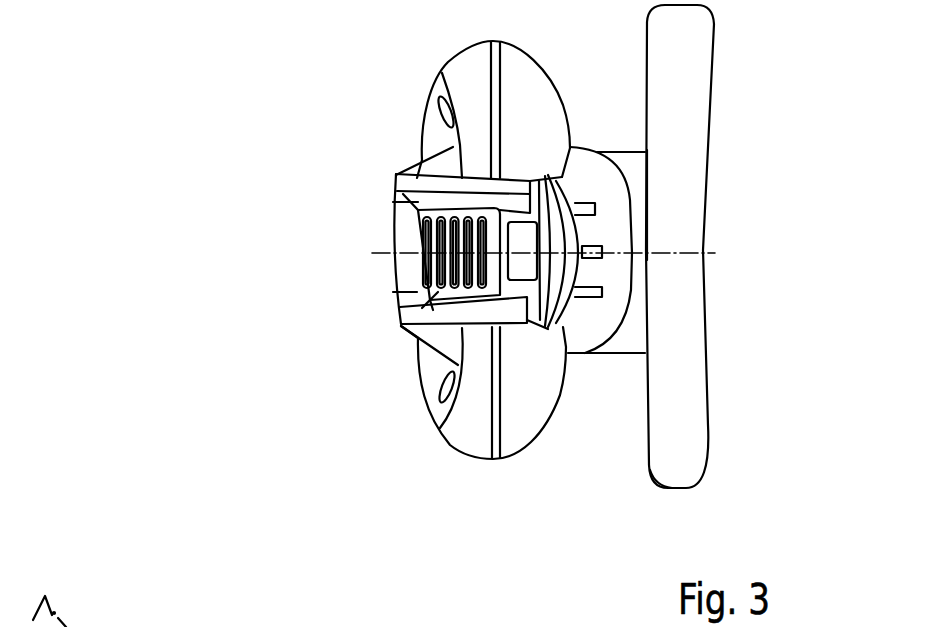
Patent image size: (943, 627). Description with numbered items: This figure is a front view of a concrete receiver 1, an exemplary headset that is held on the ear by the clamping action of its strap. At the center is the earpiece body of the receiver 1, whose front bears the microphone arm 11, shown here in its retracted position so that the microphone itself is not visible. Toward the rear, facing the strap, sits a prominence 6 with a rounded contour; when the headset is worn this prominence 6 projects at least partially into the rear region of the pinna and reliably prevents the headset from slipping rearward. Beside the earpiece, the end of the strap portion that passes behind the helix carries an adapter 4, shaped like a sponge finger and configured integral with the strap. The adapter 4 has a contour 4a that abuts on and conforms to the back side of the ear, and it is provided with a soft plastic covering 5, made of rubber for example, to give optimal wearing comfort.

The receiver 1 is at (363, 234).
The adapter 4 is at (830, 50).
The contour 4a is at (673, 212).
The soft plastic covering 5 is at (690, 448).
The prominence 6 is at (597, 133).
The microphone arm 11 is at (400, 330).